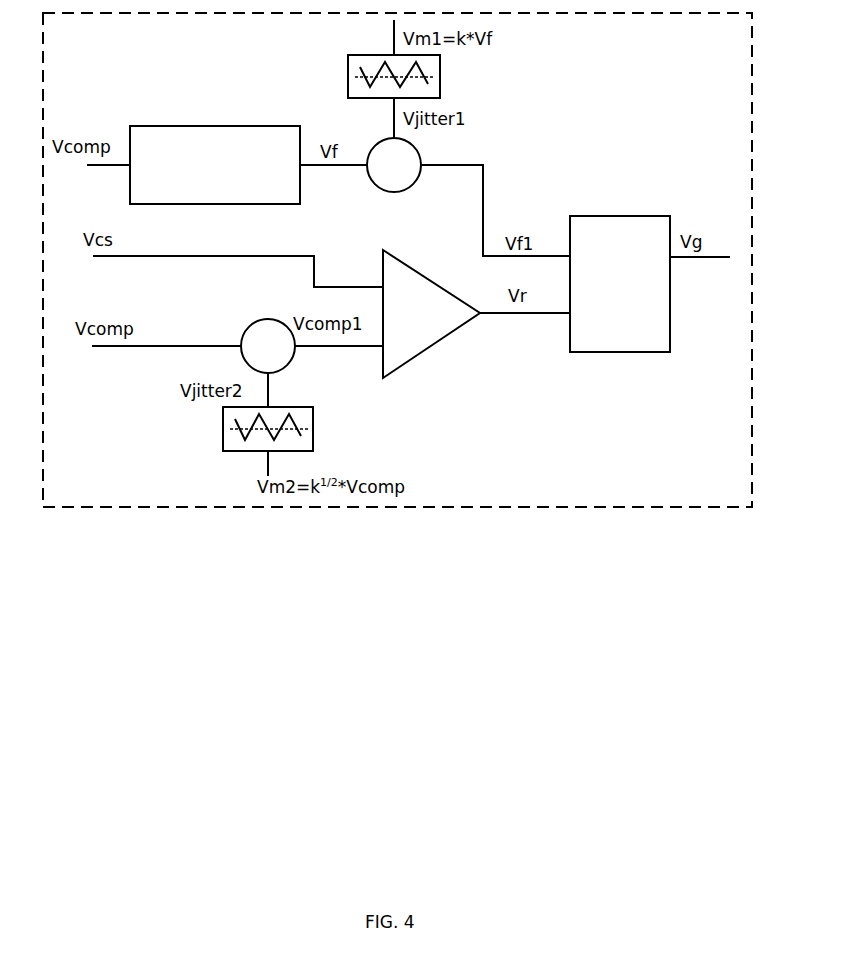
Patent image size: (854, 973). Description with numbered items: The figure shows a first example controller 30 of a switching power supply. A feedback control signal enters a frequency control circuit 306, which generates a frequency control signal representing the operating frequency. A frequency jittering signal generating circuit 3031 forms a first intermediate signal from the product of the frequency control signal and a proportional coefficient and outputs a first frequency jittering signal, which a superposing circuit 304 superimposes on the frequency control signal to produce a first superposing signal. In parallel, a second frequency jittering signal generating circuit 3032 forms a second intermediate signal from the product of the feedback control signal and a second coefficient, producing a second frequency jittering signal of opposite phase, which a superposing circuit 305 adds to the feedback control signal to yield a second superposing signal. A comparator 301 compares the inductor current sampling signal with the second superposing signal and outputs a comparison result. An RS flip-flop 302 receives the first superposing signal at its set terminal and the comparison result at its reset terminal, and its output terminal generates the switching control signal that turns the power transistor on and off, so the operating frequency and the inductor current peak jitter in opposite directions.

The controller 30 is at (701, 43).
The comparator 301 is at (438, 340).
The RS flip-flop 302 is at (670, 300).
The superposing circuit 304 is at (372, 180).
The superposing circuit 305 is at (242, 330).
The frequency control circuit 306 is at (266, 204).
The frequency jittering signal generating circuit 3031 is at (348, 68).
The frequency jittering signal generating circuit 3032 is at (223, 430).